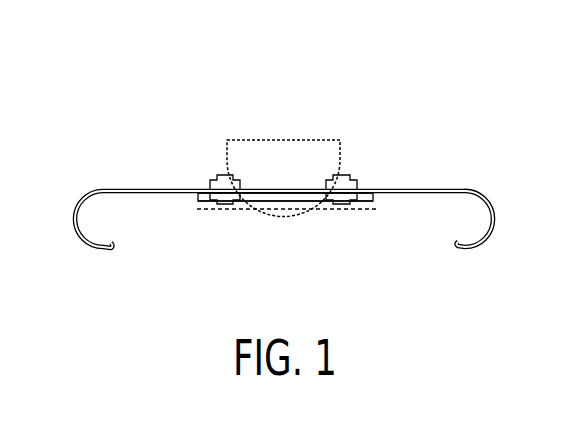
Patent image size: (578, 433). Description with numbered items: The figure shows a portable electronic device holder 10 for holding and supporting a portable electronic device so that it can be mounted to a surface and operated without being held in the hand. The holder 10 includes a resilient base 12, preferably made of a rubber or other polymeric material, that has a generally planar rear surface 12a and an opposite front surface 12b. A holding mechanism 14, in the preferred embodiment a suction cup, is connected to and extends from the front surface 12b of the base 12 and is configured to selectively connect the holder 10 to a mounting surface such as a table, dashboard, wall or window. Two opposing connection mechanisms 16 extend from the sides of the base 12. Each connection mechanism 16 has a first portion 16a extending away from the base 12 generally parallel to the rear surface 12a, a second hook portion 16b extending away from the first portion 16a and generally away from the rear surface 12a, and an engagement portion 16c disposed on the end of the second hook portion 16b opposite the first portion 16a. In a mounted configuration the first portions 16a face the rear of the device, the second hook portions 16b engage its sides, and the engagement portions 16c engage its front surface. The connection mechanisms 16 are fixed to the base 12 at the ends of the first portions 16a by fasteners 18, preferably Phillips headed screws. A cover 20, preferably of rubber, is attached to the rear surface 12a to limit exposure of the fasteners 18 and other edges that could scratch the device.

The portable electronic device holder 10 is at (185, 127).
The resilient base 12 is at (270, 204).
The rear surface 12a is at (302, 205).
The front surface 12b is at (313, 188).
The holding mechanism 14 is at (265, 152).
The connection mechanism 16 is at (480, 166).
The first portion 16a is at (143, 189).
The second hook portion 16b is at (78, 233).
The engagement portion 16c is at (103, 251).
The fasteners 18 is at (222, 207).
The cover 20 is at (367, 211).